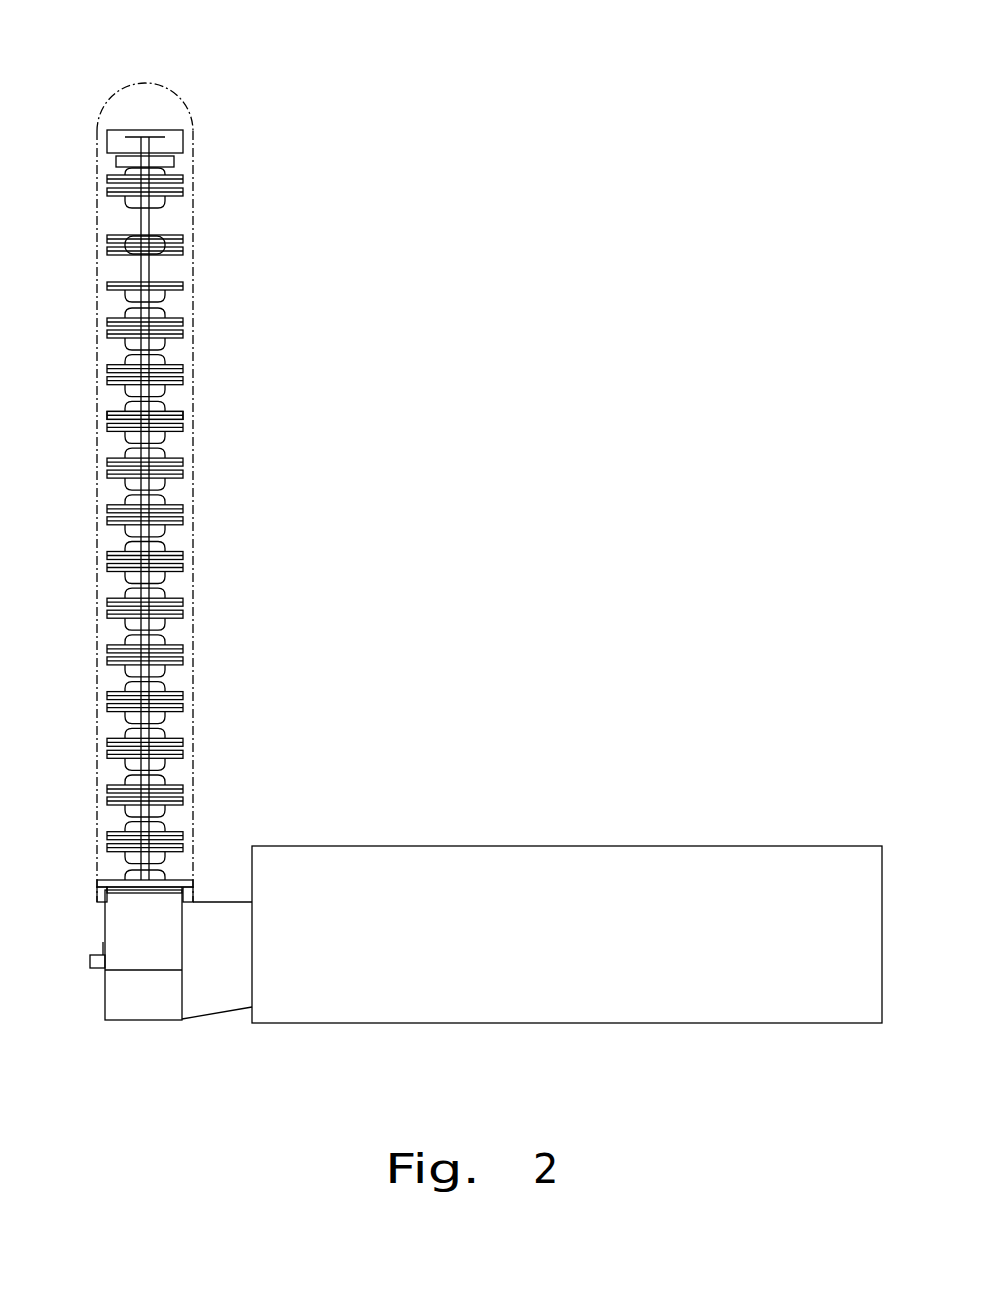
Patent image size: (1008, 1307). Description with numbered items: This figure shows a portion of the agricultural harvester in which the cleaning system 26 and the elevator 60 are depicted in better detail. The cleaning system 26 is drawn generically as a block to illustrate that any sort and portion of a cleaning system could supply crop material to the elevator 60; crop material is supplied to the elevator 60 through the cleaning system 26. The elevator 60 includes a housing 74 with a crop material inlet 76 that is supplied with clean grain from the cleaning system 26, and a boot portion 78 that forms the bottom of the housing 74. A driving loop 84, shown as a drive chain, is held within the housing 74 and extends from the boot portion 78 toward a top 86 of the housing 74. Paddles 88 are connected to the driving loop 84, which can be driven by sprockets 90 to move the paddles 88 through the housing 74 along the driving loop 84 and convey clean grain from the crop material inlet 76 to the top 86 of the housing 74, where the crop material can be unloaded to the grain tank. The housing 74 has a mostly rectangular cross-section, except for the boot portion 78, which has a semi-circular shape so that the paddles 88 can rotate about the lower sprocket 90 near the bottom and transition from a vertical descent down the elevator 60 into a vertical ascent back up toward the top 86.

The cleaning system 26 is at (636, 1028).
The elevator 60 is at (224, 572).
The housing 74 is at (193, 238).
The crop material inlet 76 is at (215, 1018).
The boot portion 78 is at (141, 1020).
The driving loop 84 is at (128, 307).
The top 86 is at (163, 82).
The paddles 88 is at (107, 417).
The sprockets 90 is at (117, 160).